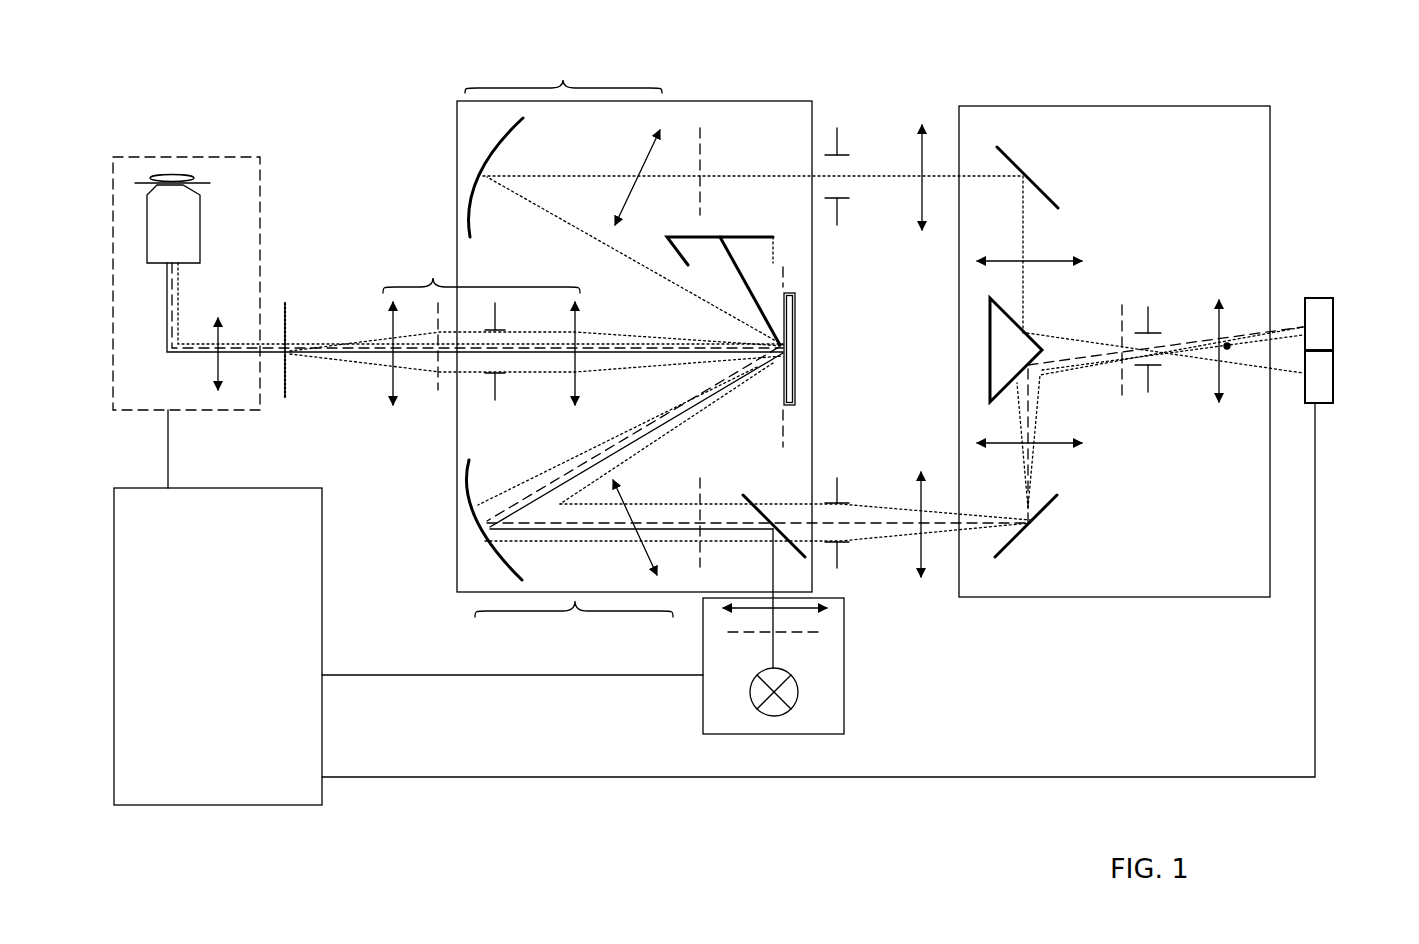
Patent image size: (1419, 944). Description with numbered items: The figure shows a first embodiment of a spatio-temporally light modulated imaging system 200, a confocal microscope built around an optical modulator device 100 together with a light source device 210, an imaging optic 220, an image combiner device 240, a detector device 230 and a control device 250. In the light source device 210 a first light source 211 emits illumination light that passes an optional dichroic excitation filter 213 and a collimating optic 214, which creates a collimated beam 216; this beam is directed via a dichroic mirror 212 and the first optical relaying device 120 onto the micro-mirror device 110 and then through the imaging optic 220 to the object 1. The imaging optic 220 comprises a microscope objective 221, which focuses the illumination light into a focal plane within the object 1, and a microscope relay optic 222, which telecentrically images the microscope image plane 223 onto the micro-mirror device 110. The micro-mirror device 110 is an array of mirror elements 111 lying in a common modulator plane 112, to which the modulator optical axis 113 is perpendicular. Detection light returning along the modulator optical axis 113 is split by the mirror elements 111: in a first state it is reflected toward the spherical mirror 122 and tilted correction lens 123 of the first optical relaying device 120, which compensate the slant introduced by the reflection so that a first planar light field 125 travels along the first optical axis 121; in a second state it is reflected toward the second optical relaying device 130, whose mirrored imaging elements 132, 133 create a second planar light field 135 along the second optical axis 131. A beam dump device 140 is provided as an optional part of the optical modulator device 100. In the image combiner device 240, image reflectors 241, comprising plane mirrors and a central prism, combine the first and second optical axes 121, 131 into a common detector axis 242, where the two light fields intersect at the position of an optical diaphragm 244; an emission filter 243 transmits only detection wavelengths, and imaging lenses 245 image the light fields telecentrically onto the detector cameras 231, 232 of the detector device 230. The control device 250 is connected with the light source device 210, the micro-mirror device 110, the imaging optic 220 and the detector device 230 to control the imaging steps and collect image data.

The spatio-temporally light modulated imaging system 200 is at (228, 93).
The object 1 is at (185, 178).
The microscope objective 221 is at (185, 232).
The imaging optic 220 is at (317, 250).
The microscope image plane 223 is at (285, 320).
The microscope relay optic 222 is at (481, 327).
The modulator optical axis 113 is at (320, 358).
The imaging element of second optical relaying device 132 is at (490, 157).
The second optical relaying device 130 is at (585, 67).
The imaging element of second optical relaying device 133 is at (643, 160).
The second planar light field 135 is at (700, 143).
The optical modulator device 100 is at (797, 142).
The beam dump device 140 is at (773, 243).
The modulator plane 112 is at (785, 283).
The micro-mirror device 110 is at (793, 373).
The mirror elements 111 is at (780, 392).
The second optical axis 131 is at (852, 178).
The spherical mirror 122 is at (473, 543).
The tilted correction lens 123 is at (642, 557).
The first planar light field 125 is at (702, 493).
The first optical relaying device 120 is at (597, 650).
The dichroic mirror 212 is at (790, 515).
The collimated beam 216 is at (805, 560).
The first optical axis 121 is at (850, 525).
The light source device 210 is at (755, 668).
The first light source 211 is at (777, 707).
The first collimating optic 214 is at (797, 610).
The first dichroic excitation filter 213 is at (790, 633).
The image reflectors 241 is at (1047, 190).
The imaging lenses 245 is at (1050, 260).
The image combiner device 240 is at (1247, 157).
The emission filter 243 is at (1122, 307).
The optical diaphragm 244 is at (1158, 318).
The common detector axis 242 is at (1227, 350).
The detector device 230 is at (1392, 362).
The detector camera 231 is at (1325, 310).
The detector camera 232 is at (1327, 397).
The control device 250 is at (184, 788).